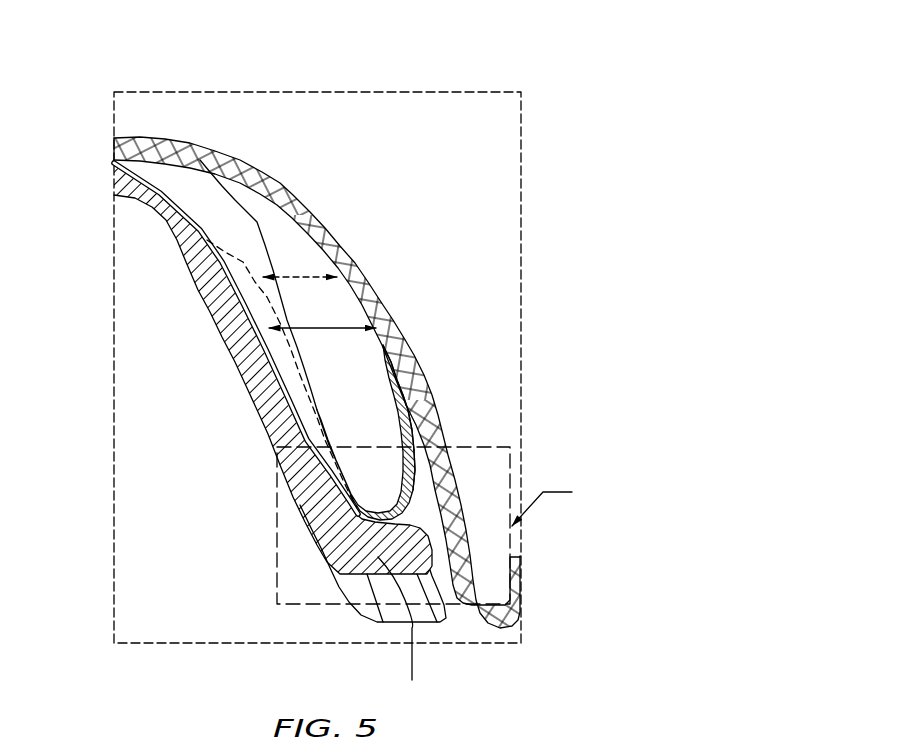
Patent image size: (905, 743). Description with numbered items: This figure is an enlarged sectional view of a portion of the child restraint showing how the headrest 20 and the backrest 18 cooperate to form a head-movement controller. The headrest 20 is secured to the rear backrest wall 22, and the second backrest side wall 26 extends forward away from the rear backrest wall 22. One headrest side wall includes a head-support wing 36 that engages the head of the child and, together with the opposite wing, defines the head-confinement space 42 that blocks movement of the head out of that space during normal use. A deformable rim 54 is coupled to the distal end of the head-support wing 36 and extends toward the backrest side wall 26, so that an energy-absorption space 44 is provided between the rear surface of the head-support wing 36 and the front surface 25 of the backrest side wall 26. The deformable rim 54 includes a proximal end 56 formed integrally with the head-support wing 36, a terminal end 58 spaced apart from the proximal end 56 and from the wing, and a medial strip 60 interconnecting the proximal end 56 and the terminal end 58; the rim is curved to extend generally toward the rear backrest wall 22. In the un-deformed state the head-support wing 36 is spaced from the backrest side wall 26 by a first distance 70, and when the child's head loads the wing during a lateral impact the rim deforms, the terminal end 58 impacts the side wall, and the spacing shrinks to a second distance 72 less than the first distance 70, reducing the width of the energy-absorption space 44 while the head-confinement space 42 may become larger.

The backrest 18 is at (256, 137).
The headrest 20 is at (188, 204).
The rear backrest wall 22 is at (341, 330).
The front surface 25 is at (312, 236).
The second backrest side wall 26 is at (430, 374).
The head-support wing 36 is at (245, 298).
The head-confinement space 42 is at (131, 287).
The energy-absorption space 44 is at (278, 225).
The deformable rim 54 is at (477, 384).
The proximal end 56 is at (373, 607).
The terminal end 58 is at (384, 344).
The medial strip 60 is at (414, 419).
The first distance 70 is at (305, 276).
The second distance 72 is at (325, 328).